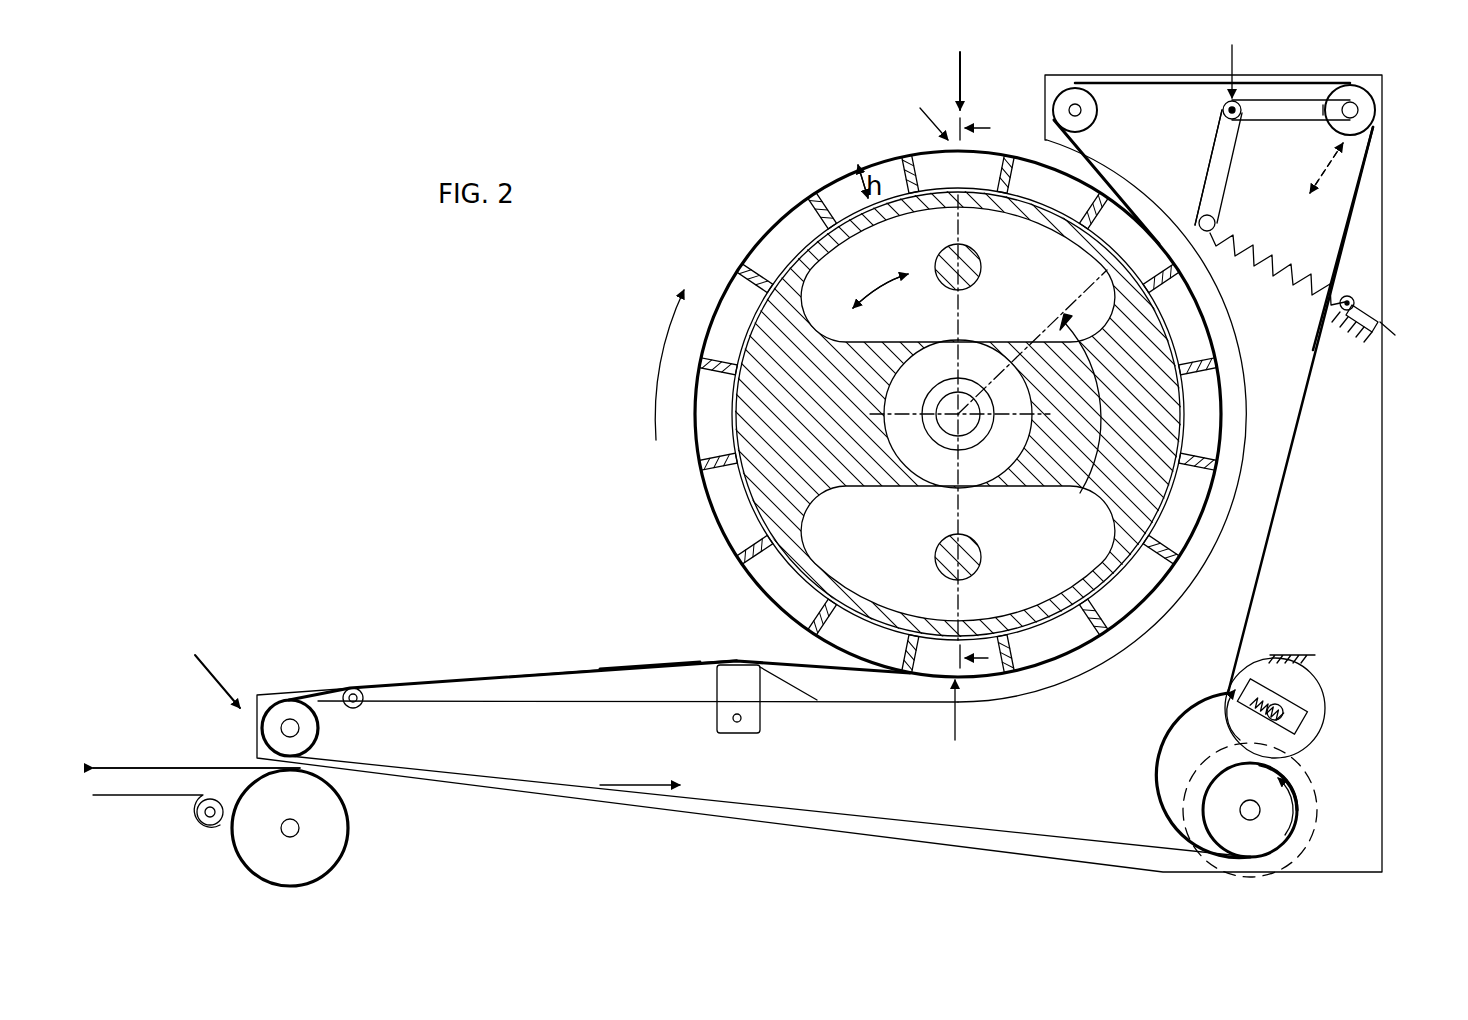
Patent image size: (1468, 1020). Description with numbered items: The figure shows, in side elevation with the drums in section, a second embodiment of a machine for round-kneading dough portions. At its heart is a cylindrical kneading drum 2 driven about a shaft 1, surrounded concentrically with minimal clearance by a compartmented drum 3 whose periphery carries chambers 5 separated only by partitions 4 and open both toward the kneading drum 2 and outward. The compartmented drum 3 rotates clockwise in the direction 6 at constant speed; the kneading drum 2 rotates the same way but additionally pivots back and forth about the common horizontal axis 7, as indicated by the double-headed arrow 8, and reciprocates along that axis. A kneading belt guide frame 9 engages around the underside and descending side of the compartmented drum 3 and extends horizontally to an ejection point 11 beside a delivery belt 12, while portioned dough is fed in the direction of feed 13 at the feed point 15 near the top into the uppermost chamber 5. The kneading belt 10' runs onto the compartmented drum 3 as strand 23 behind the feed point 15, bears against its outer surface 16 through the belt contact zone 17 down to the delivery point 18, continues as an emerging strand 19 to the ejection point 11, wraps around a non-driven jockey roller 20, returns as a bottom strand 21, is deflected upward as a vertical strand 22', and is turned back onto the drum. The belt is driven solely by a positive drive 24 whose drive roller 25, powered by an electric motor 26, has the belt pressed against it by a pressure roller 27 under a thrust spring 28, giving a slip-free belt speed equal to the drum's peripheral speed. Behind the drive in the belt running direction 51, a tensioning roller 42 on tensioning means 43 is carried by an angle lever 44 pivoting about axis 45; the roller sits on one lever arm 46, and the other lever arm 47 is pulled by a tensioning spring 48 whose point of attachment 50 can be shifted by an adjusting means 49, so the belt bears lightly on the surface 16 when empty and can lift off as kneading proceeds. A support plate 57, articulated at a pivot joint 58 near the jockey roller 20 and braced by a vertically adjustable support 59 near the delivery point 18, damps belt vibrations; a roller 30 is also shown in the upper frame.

The shaft 1 is at (972, 392).
The kneading drum 2 is at (975, 205).
The compartmented drum 3 is at (818, 190).
The partitions 4 is at (748, 268).
The chambers 5 is at (656, 492).
The direction of rotation 6 is at (655, 362).
The axis 7 is at (955, 400).
The double-headed arrow 8 is at (880, 292).
The kneading belt guide frame 9 is at (1084, 767).
The kneading belt 10' is at (1334, 295).
The ejection point 11 is at (202, 667).
The delivery belt 12 is at (155, 768).
The direction of feed 13 is at (960, 60).
The feed point 15 is at (920, 113).
The outer surface 16 is at (726, 540).
The belt contact zone 17 is at (975, 556).
The delivery point 18 is at (956, 724).
The emerging strand 19 is at (497, 667).
The jockey roller 20 is at (300, 728).
The bottom strand 21 is at (803, 822).
The vertical strand 22' is at (1224, 388).
The strand 23 is at (1113, 184).
The positive drive 24 is at (1318, 757).
The drive roller 25 is at (1295, 797).
The electric motor 26 is at (1318, 832).
The pressure roller 27 is at (1312, 717).
The thrust spring 28 is at (1300, 678).
The guide pulley 30 is at (1098, 110).
The tensioning roller 42 is at (1376, 110).
The tensioning means 43 is at (1273, 165).
The angle lever 44 is at (1280, 105).
The pivoting axis 45 is at (1222, 110).
The lever arm 46 is at (1292, 100).
The lever arm 47 is at (1213, 185).
The tensioning spring 48 is at (1288, 270).
The adjusting means 49 is at (1380, 316).
The point of attachment 50 is at (1352, 296).
The direction of rotation of the kneading belt 51 is at (632, 785).
The kneading belt support plate 57 is at (540, 686).
The pivot joint 58 is at (362, 702).
The vertically adjustable support 59 is at (735, 690).